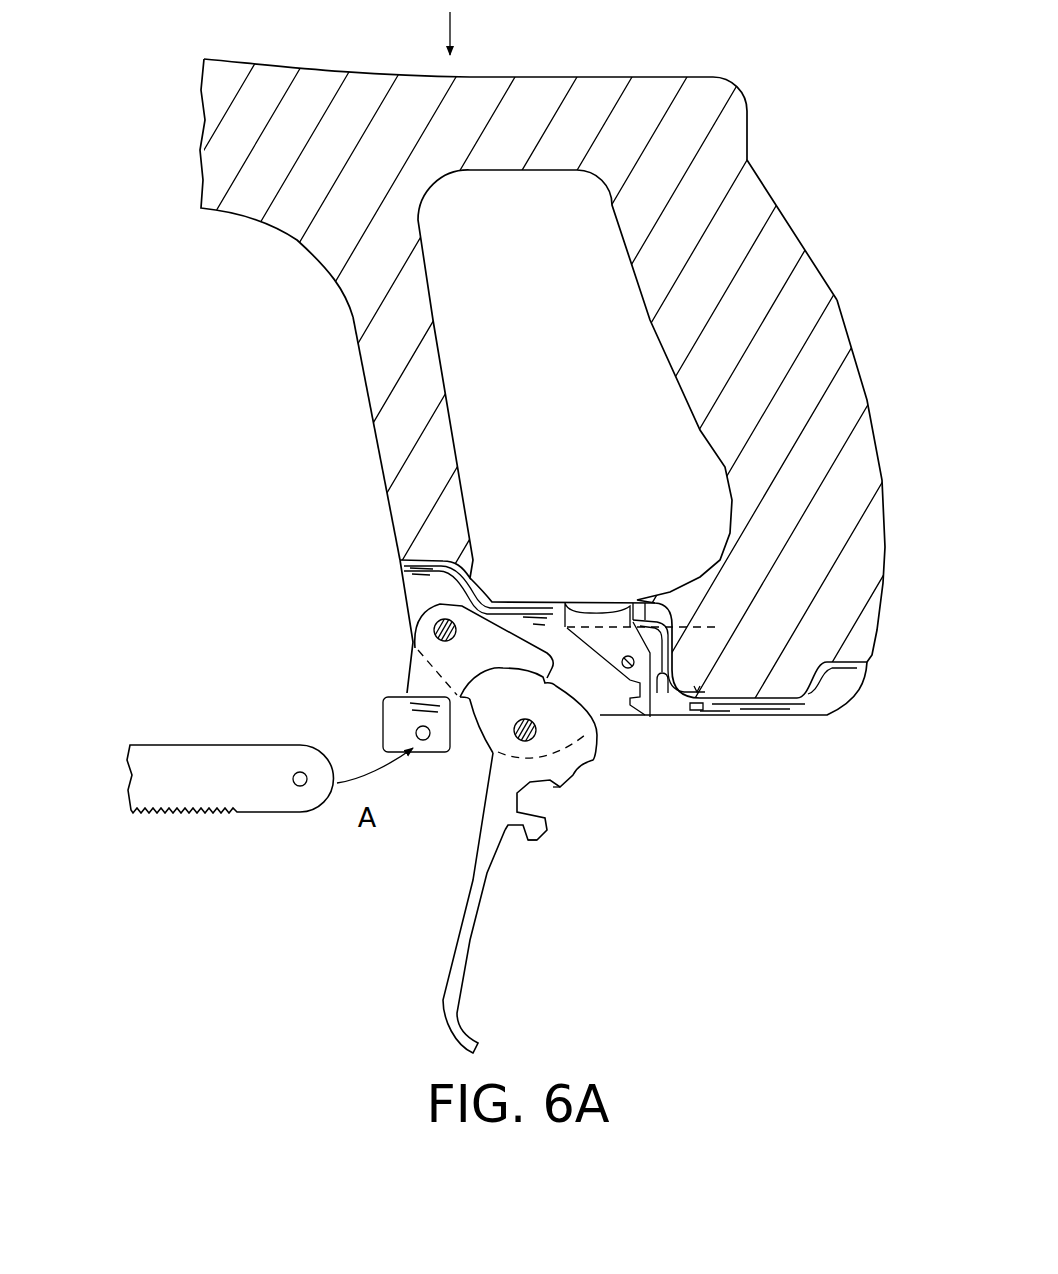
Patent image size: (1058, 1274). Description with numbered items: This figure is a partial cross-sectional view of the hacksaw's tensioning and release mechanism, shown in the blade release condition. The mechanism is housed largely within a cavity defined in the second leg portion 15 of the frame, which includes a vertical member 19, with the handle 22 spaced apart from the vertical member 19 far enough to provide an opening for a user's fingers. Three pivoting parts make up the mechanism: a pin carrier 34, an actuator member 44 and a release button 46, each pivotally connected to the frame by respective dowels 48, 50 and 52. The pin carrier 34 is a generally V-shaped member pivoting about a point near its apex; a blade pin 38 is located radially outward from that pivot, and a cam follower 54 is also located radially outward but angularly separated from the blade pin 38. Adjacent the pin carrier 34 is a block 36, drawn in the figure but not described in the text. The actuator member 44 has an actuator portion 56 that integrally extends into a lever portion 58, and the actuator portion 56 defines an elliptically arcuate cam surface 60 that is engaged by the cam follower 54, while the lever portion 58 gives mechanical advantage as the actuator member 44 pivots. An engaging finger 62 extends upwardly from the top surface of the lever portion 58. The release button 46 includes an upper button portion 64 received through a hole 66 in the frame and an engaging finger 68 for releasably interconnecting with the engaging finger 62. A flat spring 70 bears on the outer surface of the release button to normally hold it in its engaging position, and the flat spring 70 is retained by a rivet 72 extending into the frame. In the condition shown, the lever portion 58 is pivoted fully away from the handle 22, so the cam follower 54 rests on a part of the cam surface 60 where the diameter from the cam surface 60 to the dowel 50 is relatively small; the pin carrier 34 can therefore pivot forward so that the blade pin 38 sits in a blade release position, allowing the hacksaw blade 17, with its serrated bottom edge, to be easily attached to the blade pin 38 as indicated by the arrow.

The second leg portion 15 is at (575, 64).
The hacksaw blade 17 is at (245, 760).
The vertical member 19 is at (370, 403).
The handle 22 is at (793, 208).
The pin carrier 34 is at (385, 665).
The magazine catch block 36 is at (387, 720).
The blade pin 38 is at (428, 741).
The actuator member 44 is at (517, 860).
The release button 46 is at (597, 578).
The dowel 48 is at (434, 633).
The dowel 50 is at (513, 735).
The dowel 52 is at (676, 643).
The cam follower 54 is at (606, 671).
The actuator portion 56 is at (553, 788).
The lever portion 58 is at (460, 900).
The cam surface 60 is at (595, 752).
The engaging finger 62 is at (547, 840).
The upper button portion 64 is at (618, 605).
The hole 66 is at (565, 600).
The engaging finger 68 is at (660, 705).
The flat spring 70 is at (690, 718).
The rivet 72 is at (703, 710).